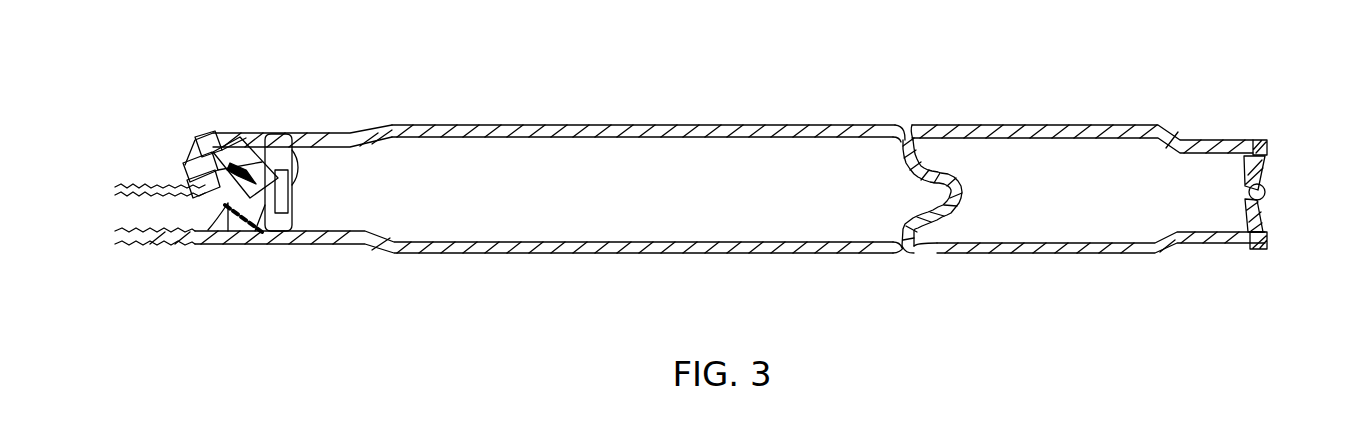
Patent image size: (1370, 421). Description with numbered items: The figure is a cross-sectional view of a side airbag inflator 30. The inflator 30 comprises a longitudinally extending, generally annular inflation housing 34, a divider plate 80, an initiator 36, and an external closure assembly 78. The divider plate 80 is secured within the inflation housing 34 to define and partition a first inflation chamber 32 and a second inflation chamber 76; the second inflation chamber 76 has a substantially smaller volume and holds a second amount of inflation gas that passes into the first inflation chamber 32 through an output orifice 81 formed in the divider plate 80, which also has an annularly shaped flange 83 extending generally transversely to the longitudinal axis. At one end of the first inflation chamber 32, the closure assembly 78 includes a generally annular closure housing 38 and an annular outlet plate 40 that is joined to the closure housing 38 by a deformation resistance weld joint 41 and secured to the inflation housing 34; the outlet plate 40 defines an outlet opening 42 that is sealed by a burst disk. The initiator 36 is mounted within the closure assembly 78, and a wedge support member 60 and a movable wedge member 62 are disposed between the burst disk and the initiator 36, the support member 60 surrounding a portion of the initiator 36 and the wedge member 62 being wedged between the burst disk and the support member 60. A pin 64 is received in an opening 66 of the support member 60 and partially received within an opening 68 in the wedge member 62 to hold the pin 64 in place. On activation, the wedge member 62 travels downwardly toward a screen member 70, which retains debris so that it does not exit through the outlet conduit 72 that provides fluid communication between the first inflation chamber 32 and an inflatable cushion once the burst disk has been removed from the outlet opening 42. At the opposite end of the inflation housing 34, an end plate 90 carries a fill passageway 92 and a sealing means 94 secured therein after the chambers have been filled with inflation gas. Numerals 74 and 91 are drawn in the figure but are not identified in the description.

The side airbag inflator 30 is at (670, 106).
The first inflation chamber 32 is at (591, 228).
The inflation housing 34 is at (660, 256).
The initiator 36 is at (205, 162).
The closure housing 38 is at (243, 247).
The outlet plate 40 is at (300, 228).
The deformation resistance weld joint 41 is at (280, 244).
The outlet opening 42 is at (306, 197).
The wedge support member 60 is at (273, 132).
The movable wedge member 62 is at (297, 167).
The pin 64 is at (253, 244).
The opening of support member 66 is at (217, 142).
The opening in wedge member 68 is at (306, 182).
The screen member 70 is at (223, 243).
The outlet conduit 72 is at (152, 244).
The lower flange 74 is at (890, 238).
The second inflation chamber 76 is at (1062, 154).
The external closure assembly 78 is at (299, 123).
The divider plate 80 is at (937, 235).
The output orifice 81 is at (955, 188).
The annularly shaped flange 83 is at (938, 143).
The end plate 90 is at (1268, 230).
The shoulder 91 is at (903, 145).
The fill passageway 92 is at (1242, 197).
The sealing means 94 is at (1268, 192).